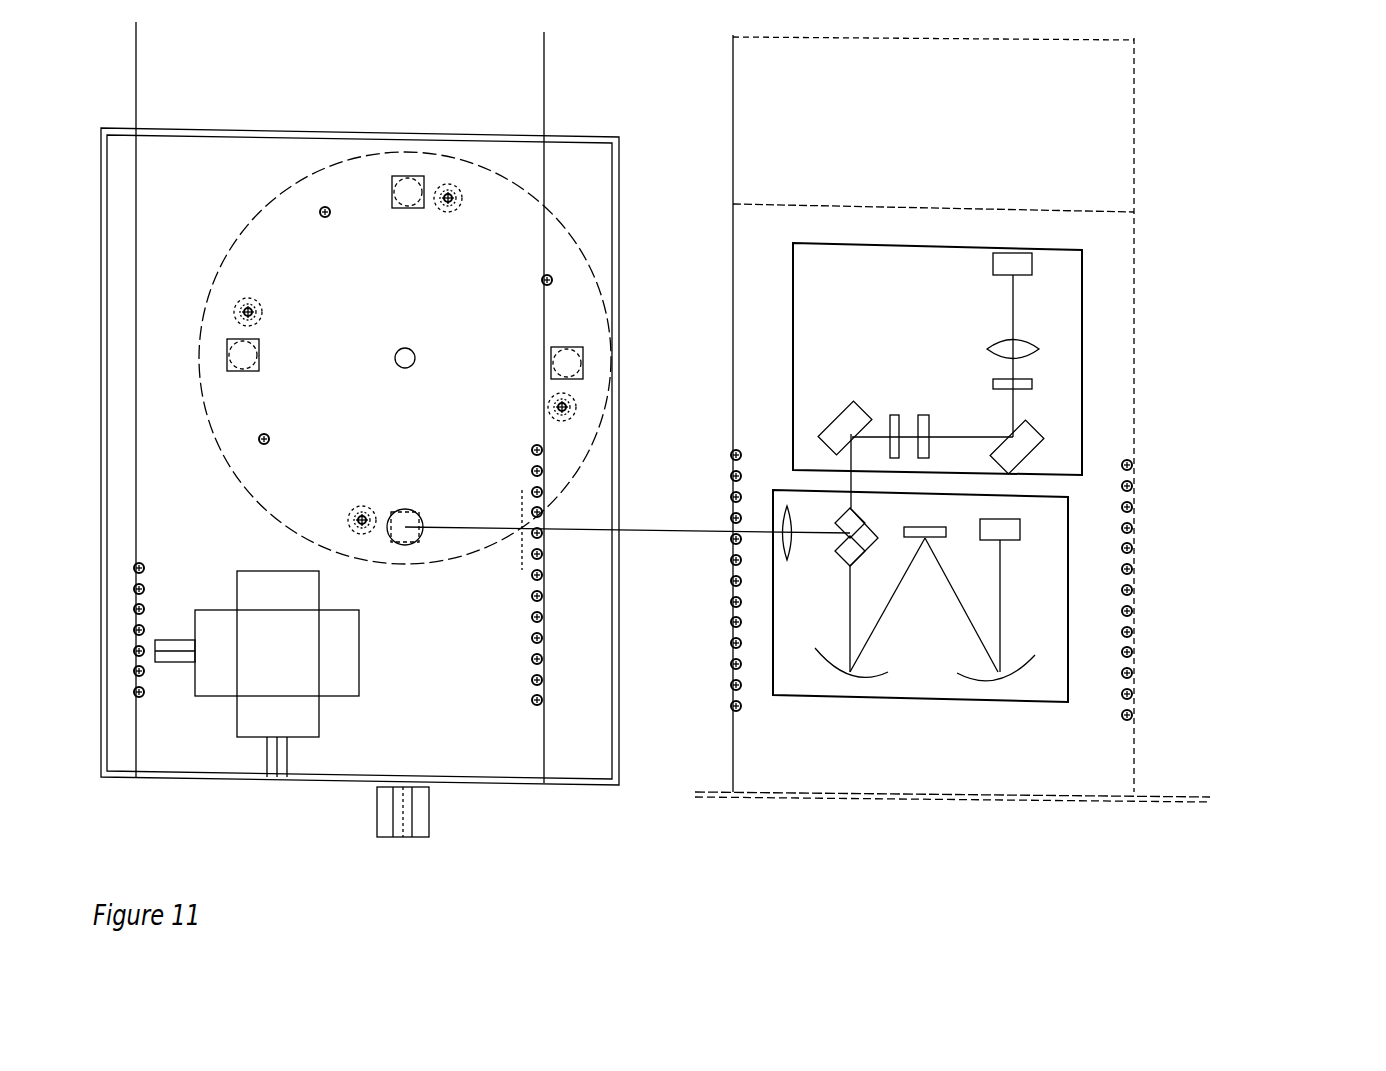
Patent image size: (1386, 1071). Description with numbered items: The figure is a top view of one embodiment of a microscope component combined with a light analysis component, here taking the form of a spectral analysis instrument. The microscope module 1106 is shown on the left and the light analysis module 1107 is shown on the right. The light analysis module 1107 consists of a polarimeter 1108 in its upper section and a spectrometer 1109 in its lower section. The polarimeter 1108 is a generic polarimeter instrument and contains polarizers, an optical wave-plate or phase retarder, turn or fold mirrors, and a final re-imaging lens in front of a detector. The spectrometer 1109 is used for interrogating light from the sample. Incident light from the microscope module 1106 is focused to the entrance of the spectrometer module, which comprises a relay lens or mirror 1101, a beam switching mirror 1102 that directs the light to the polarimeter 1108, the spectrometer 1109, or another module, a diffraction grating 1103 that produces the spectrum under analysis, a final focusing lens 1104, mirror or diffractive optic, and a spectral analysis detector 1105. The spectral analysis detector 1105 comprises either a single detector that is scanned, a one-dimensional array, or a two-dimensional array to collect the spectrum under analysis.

The relay lens or mirror 1101 is at (785, 577).
The beam switching mirror 1102 is at (852, 560).
The diffraction grating 1103 is at (944, 524).
The final focusing lens 1104 is at (1030, 667).
The spectral analysis detector 1105 is at (1024, 530).
The microscope module 1106 is at (382, 114).
The light analysis module 1107 is at (967, 127).
The polarimeter 1108 is at (1084, 330).
The spectrometer 1109 is at (1076, 579).